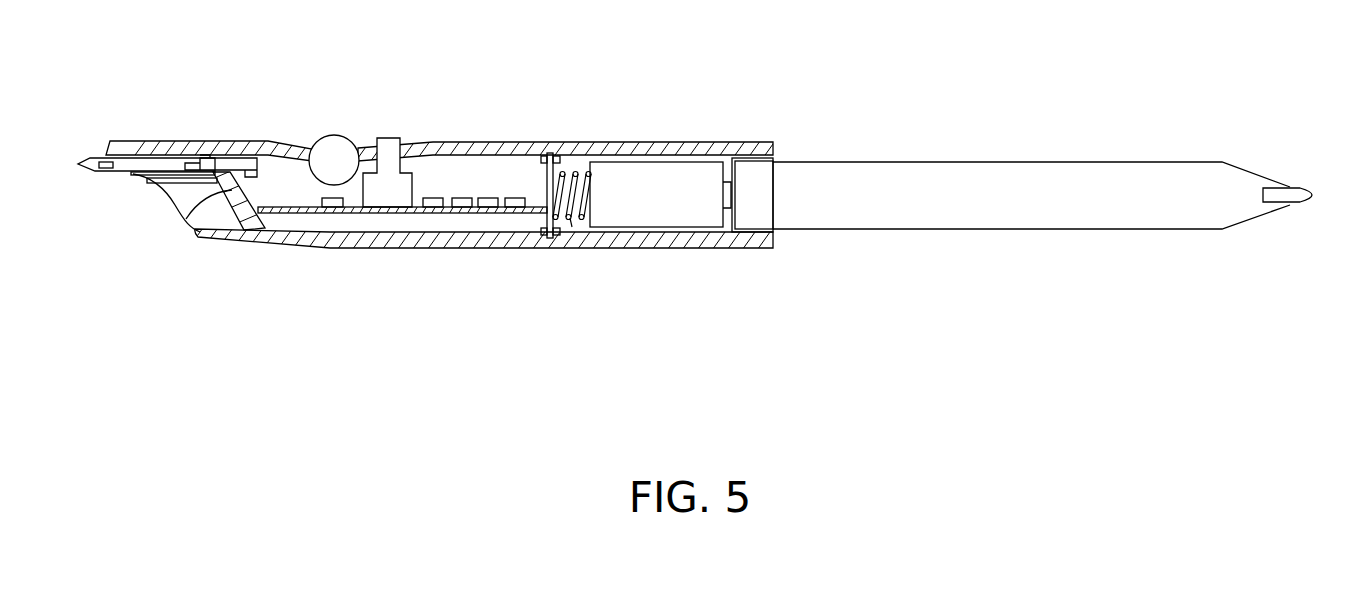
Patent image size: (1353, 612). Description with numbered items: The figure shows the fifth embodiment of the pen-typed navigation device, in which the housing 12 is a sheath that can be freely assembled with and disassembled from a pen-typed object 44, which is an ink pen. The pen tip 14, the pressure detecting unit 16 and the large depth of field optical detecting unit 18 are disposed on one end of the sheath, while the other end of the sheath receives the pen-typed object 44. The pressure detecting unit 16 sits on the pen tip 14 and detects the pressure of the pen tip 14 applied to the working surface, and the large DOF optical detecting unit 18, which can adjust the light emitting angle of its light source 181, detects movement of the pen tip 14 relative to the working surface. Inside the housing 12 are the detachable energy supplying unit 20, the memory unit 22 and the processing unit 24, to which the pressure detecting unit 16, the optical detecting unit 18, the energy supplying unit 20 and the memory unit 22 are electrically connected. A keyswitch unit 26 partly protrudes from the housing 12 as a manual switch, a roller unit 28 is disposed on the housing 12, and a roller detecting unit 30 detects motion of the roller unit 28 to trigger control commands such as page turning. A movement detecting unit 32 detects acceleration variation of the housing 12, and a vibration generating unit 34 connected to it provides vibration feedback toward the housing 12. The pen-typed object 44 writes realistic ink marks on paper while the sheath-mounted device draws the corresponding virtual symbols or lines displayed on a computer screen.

The housing 12 is at (487, 148).
The pen tip 14 is at (150, 167).
The pressure detecting unit 16 is at (104, 170).
The large depth of field optical detecting unit 18 is at (181, 226).
The light source 181 is at (228, 222).
The energy supplying unit 20 is at (637, 172).
The memory unit 22 is at (515, 207).
The processing unit 24 is at (488, 207).
The keyswitch unit 26 is at (387, 155).
The roller unit 28 is at (335, 153).
The roller detecting unit 30 is at (335, 208).
The movement detecting unit 32 is at (462, 207).
The vibration generating unit 34 is at (433, 207).
The pen-typed object 44 is at (935, 178).